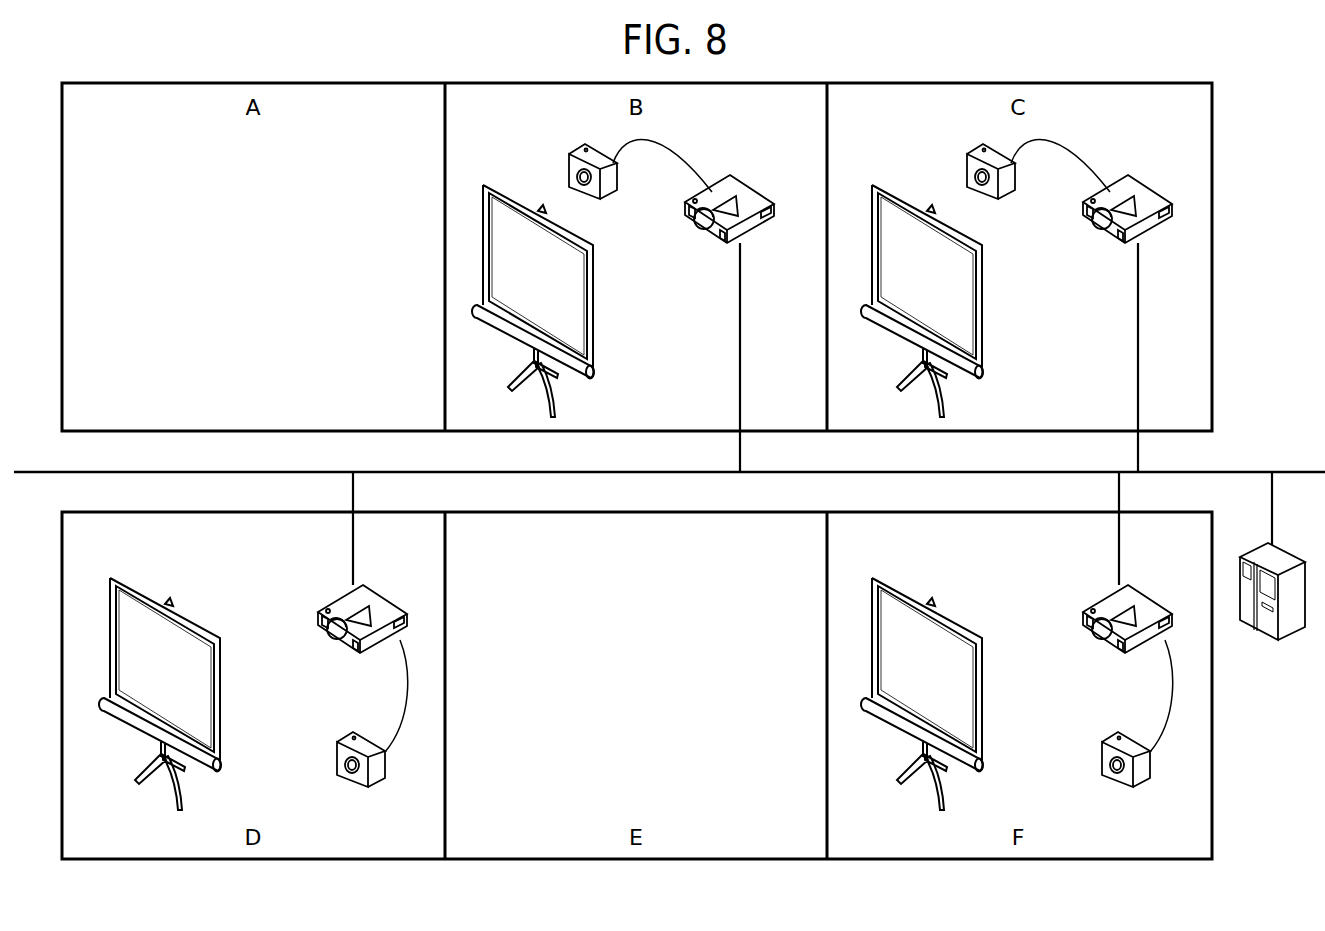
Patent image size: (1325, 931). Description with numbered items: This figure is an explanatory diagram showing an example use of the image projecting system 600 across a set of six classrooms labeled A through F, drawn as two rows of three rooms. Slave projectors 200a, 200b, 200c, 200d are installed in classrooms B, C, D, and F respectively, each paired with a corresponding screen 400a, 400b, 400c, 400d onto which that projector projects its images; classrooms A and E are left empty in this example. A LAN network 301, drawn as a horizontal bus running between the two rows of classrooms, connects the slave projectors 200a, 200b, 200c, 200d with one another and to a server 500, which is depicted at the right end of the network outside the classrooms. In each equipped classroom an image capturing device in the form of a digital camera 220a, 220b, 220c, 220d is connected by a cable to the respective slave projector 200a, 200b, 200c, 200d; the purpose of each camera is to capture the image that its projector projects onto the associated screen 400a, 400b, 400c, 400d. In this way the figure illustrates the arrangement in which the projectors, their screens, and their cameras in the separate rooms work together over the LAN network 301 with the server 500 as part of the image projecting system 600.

The image projecting system 600 is at (1043, 70).
The LAN network 301 is at (50, 471).
The slave projector 200a is at (735, 196).
The slave projector 200b is at (1137, 196).
The slave projector 200c is at (395, 581).
The slave projector 200d is at (1133, 607).
The digital camera 220a is at (577, 155).
The digital camera 220b is at (975, 155).
The digital camera 220c is at (340, 738).
The digital camera 220d is at (1110, 744).
The screen 400a is at (565, 301).
The screen 400b is at (955, 301).
The screen 400c is at (222, 687).
The screen 400d is at (955, 694).
The server 500 is at (1279, 546).